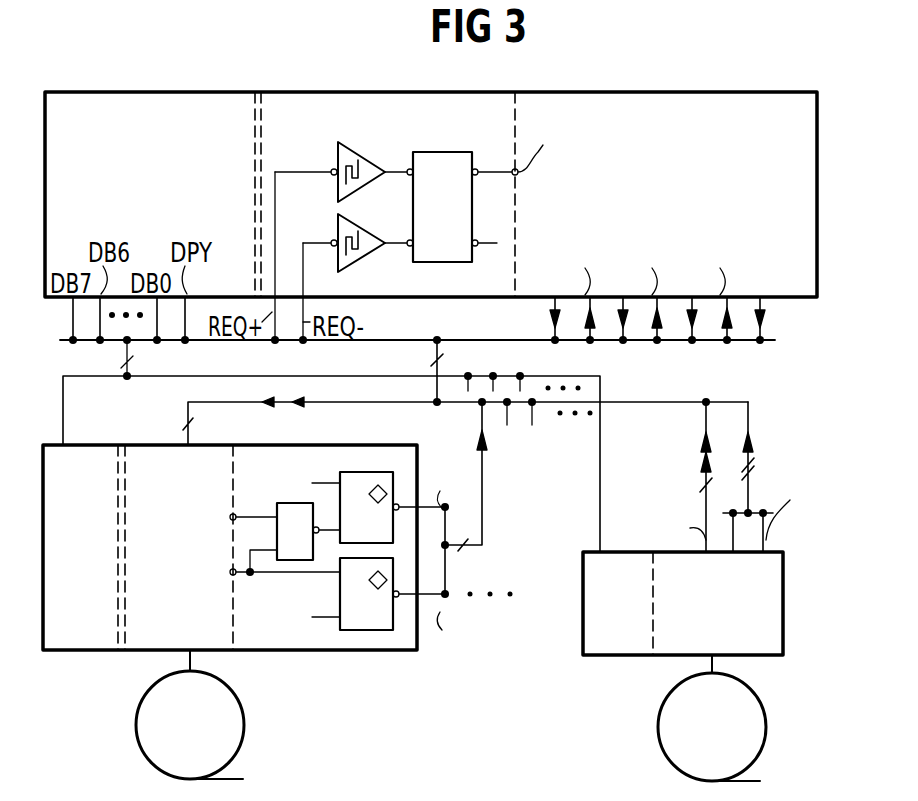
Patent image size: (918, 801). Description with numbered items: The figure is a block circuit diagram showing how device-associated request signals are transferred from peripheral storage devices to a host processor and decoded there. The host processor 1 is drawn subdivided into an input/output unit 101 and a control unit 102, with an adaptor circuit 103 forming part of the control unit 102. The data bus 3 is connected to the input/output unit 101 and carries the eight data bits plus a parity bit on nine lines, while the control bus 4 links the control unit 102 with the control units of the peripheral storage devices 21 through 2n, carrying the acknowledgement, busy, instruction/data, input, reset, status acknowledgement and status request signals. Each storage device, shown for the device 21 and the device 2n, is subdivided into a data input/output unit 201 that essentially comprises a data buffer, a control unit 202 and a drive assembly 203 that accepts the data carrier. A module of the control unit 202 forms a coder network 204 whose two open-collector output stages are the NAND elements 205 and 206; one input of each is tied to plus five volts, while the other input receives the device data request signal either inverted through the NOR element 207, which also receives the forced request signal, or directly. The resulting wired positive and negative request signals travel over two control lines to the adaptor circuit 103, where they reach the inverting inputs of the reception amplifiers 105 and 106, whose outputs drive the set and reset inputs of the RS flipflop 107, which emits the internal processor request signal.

The host processor 1 is at (272, 90).
The input/output unit 101 is at (163, 103).
The control unit 102 is at (742, 105).
The adaptor circuit 103 is at (390, 196).
The reception amplifier 105 is at (376, 143).
The reception amplifier 106 is at (368, 256).
The RS flipflop 107 is at (446, 160).
The data bus 3 is at (350, 380).
The control bus 4 is at (700, 402).
The peripheral storage device 21 is at (130, 675).
The peripheral storage device 2n is at (632, 684).
The data input/output unit 201 is at (76, 458).
The control unit 202 is at (170, 458).
The drive assembly 203 is at (244, 732).
The coder network 204 is at (302, 650).
The NAND element 205 is at (350, 472).
The NAND element 206 is at (380, 620).
The NOR element 207 is at (292, 550).